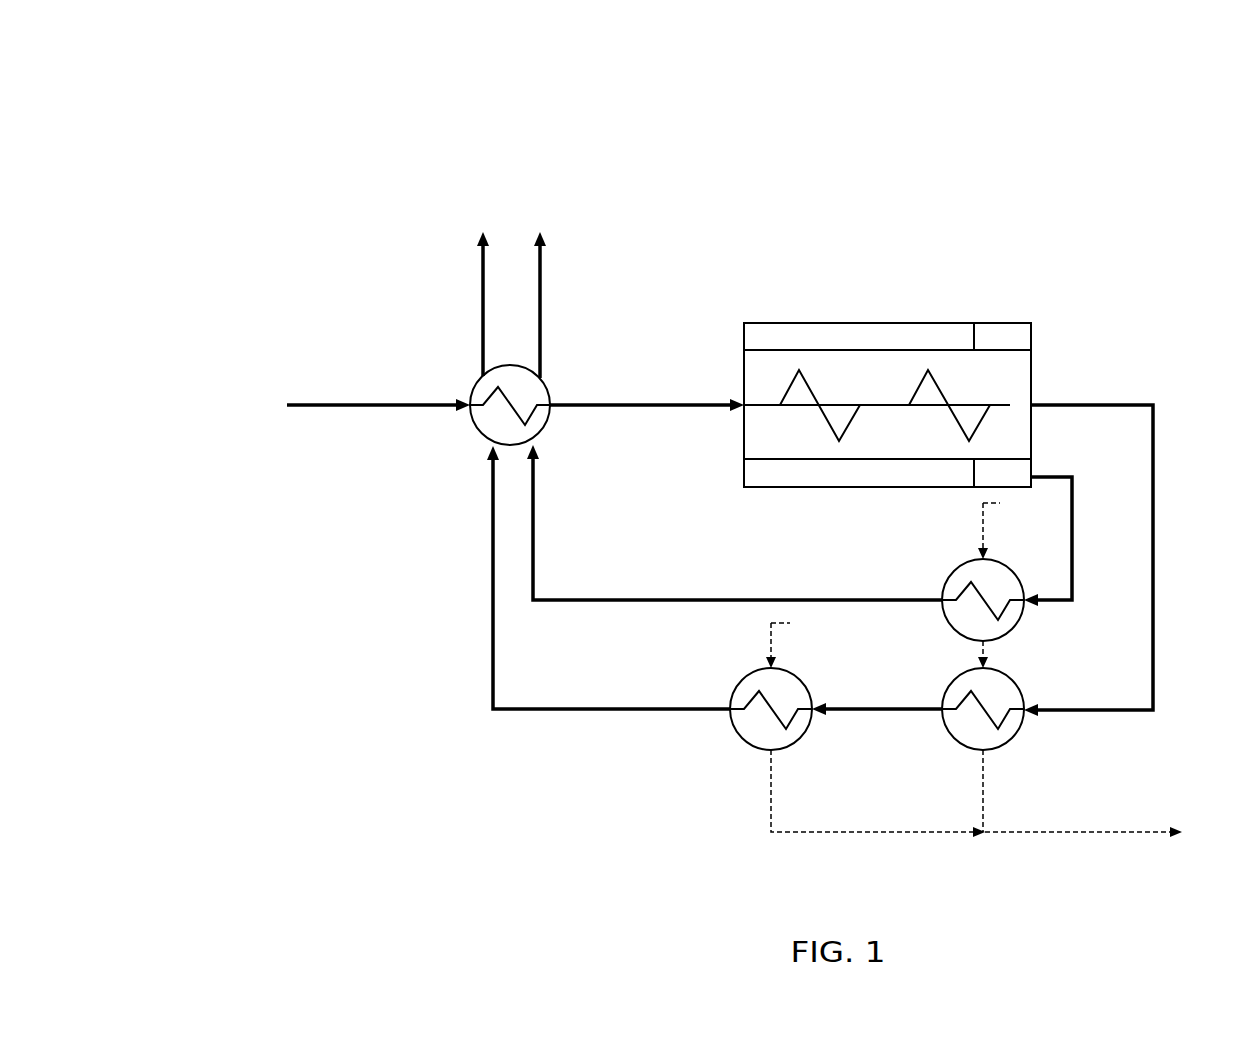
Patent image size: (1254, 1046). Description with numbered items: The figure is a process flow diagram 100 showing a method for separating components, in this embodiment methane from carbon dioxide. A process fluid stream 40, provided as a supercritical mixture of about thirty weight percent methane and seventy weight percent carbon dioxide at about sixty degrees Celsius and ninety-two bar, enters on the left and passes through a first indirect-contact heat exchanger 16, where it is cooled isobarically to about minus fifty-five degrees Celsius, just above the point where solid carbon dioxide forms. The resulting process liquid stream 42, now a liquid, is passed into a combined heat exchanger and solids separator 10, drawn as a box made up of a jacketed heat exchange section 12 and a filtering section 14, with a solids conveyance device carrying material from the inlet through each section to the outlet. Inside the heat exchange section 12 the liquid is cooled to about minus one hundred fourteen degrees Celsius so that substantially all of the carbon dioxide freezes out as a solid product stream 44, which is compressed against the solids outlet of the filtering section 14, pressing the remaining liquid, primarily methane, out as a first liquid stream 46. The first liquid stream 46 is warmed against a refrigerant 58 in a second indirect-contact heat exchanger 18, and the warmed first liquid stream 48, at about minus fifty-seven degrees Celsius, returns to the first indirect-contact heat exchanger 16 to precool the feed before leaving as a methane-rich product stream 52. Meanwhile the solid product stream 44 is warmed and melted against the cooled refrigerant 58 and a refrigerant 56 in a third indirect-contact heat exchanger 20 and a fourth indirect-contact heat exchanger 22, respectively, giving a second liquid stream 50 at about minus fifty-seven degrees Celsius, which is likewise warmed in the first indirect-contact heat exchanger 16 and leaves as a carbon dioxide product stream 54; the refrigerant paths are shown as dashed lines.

The process flow diagram 100 is at (248, 111).
The combined heat exchanger and solids separator 10 is at (744, 323).
The heat exchange section 12 is at (874, 338).
The filtering section 14 is at (1009, 335).
The first indirect-contact heat exchanger 16 is at (478, 380).
The second indirect-contact heat exchanger 18 is at (952, 576).
The third indirect-contact heat exchanger 20 is at (950, 685).
The fourth indirect-contact heat exchanger 22 is at (740, 686).
The process fluid stream 40 is at (357, 406).
The process liquid stream 42 is at (647, 393).
The solid product stream 44 is at (1088, 544).
The first liquid stream 46 is at (1069, 541).
The warmed first liquid stream 48 is at (734, 522).
The second liquid stream 50 is at (714, 580).
The methane-rich product stream 52 is at (541, 289).
The carbon dioxide product stream 54 is at (484, 288).
The refrigerant 56 is at (974, 723).
The refrigerant 58 is at (1010, 661).